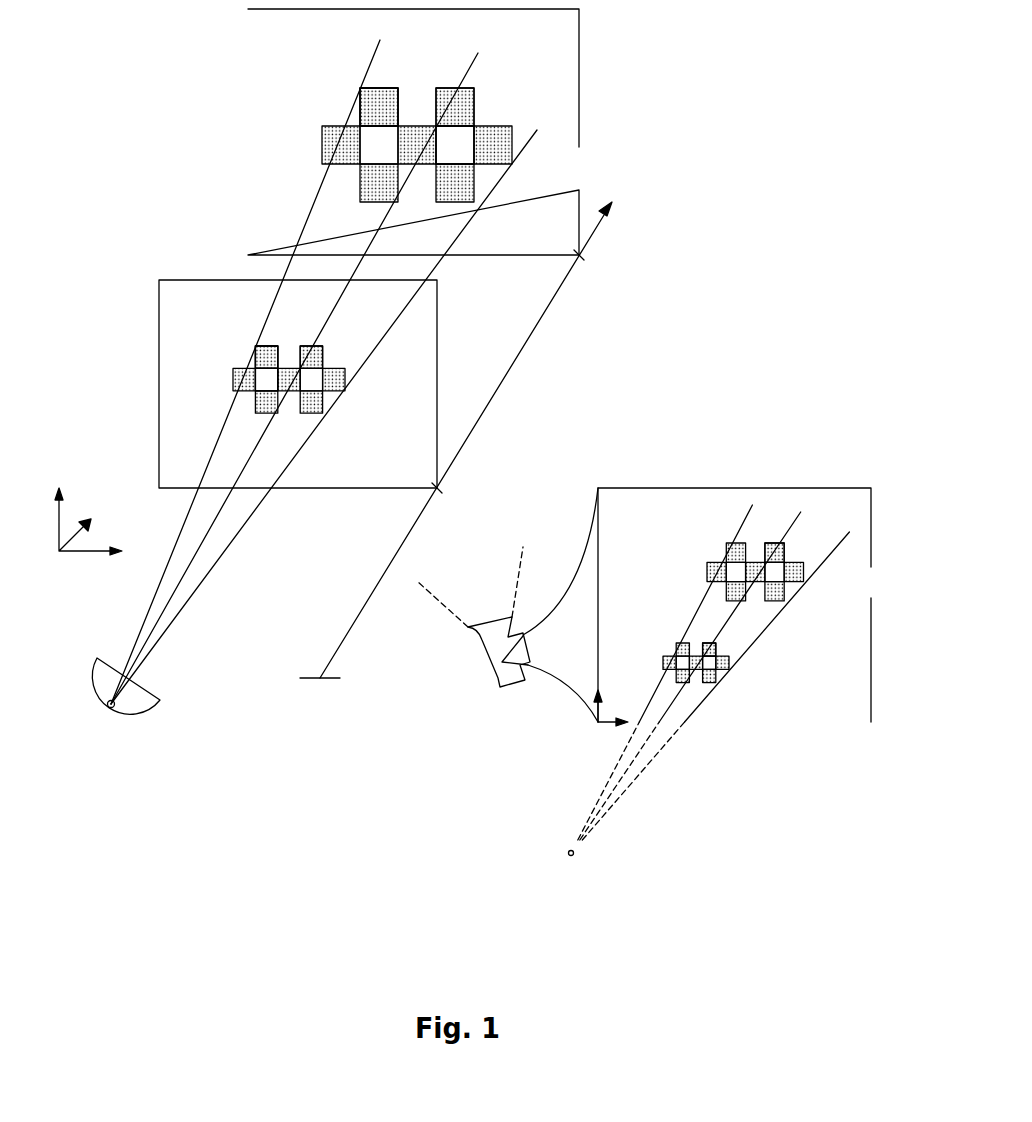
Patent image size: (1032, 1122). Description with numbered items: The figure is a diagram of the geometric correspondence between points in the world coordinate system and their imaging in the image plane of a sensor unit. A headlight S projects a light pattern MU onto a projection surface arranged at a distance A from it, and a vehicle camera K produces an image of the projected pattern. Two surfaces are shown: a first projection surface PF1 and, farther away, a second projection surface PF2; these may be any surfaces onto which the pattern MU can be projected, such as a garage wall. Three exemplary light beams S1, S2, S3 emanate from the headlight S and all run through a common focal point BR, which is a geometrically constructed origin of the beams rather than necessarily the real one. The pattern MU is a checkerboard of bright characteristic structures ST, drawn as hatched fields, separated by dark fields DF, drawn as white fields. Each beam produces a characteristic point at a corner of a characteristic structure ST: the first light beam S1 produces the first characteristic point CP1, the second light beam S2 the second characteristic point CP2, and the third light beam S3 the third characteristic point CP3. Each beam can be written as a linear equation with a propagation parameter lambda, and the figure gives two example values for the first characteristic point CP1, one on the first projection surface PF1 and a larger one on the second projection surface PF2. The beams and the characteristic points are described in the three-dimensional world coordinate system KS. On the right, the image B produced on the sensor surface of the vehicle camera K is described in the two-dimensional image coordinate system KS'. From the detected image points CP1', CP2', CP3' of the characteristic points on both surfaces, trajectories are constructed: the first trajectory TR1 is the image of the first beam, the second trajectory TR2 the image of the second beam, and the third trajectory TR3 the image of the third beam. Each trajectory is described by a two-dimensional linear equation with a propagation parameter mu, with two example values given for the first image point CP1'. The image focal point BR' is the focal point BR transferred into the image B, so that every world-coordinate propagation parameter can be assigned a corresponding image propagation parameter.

The second projection surface PF2 is at (579, 104).
The first projection surface PF1 is at (437, 328).
The image B is at (620, 488).
The light pattern MU is at (317, 110).
The characteristic structure ST is at (380, 103).
The third characteristic point CP3 is at (287, 204).
The second characteristic point CP2 is at (373, 207).
The first characteristic point CP1 is at (474, 307).
The dark field DF is at (457, 140).
The first light beam S1 is at (205, 578).
The second light beam S2 is at (203, 545).
The third light beam S3 is at (190, 513).
The headlight S is at (98, 707).
The focal point BR is at (139, 743).
The world coordinate system KS is at (81, 546).
The distance A is at (605, 222).
The vehicle camera K is at (500, 686).
The first trajectory TR1 is at (843, 550).
The second trajectory TR2 is at (788, 513).
The third trajectory TR3 is at (735, 515).
The third image point CP3' is at (706, 598).
The second image point CP2' is at (742, 599).
The first image point CP1' is at (820, 669).
The image coordinate system KS' is at (585, 725).
The image focal point BR' is at (601, 889).